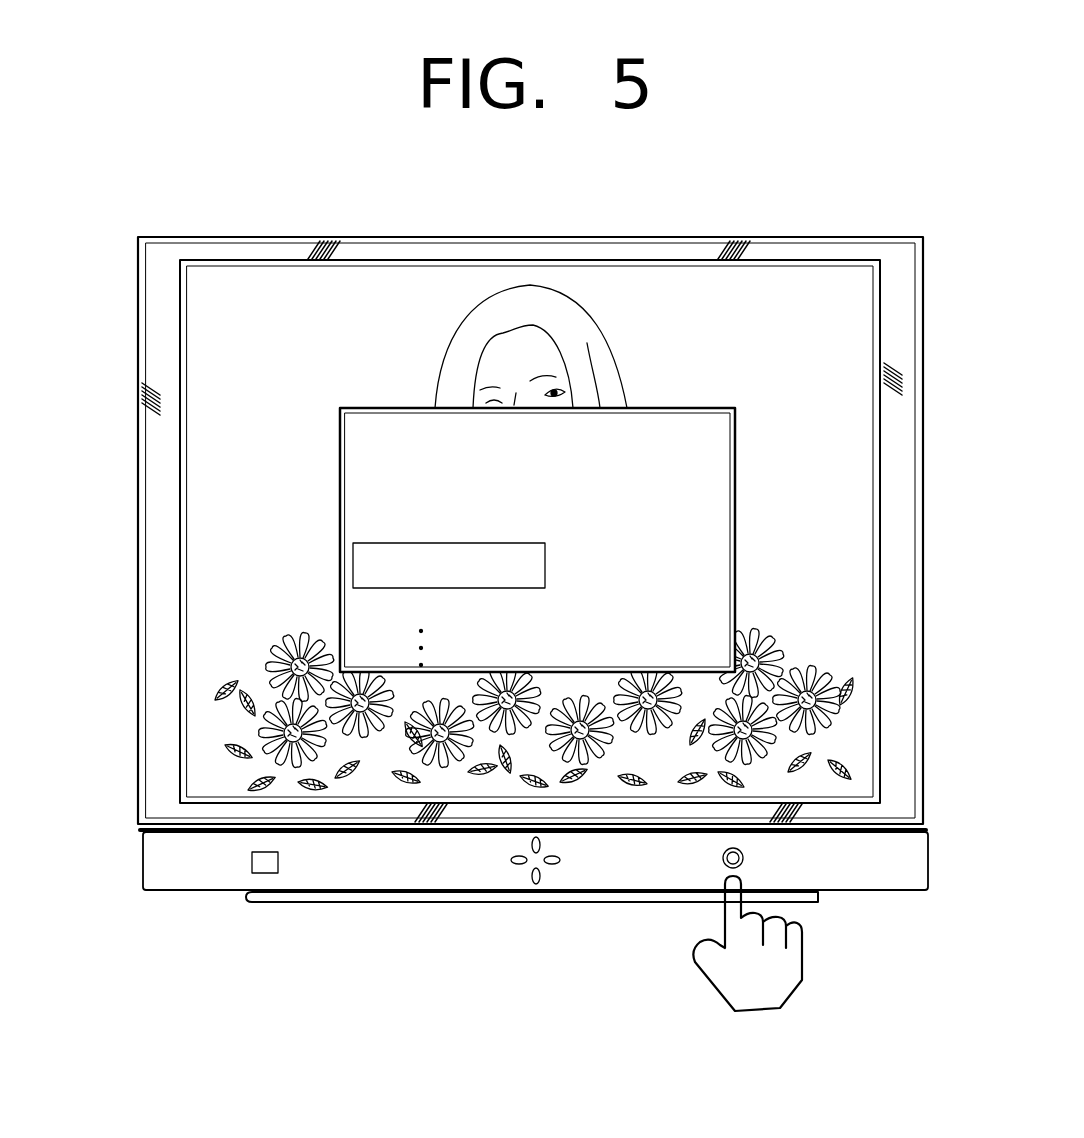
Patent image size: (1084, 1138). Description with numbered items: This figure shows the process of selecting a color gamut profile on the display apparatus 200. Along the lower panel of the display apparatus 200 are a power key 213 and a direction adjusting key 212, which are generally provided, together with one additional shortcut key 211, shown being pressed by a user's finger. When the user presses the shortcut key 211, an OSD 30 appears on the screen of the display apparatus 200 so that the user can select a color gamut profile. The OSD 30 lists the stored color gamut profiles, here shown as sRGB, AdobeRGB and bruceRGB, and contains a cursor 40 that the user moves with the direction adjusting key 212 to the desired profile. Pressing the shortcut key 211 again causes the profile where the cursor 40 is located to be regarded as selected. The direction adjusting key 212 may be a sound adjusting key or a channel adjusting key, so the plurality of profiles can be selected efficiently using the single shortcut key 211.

The display apparatus 200 is at (752, 240).
The OSD 30 is at (345, 440).
The cursor 40 is at (352, 560).
The shortcut key 211 is at (725, 860).
The direction adjusting key 212 is at (531, 882).
The power key 213 is at (268, 872).